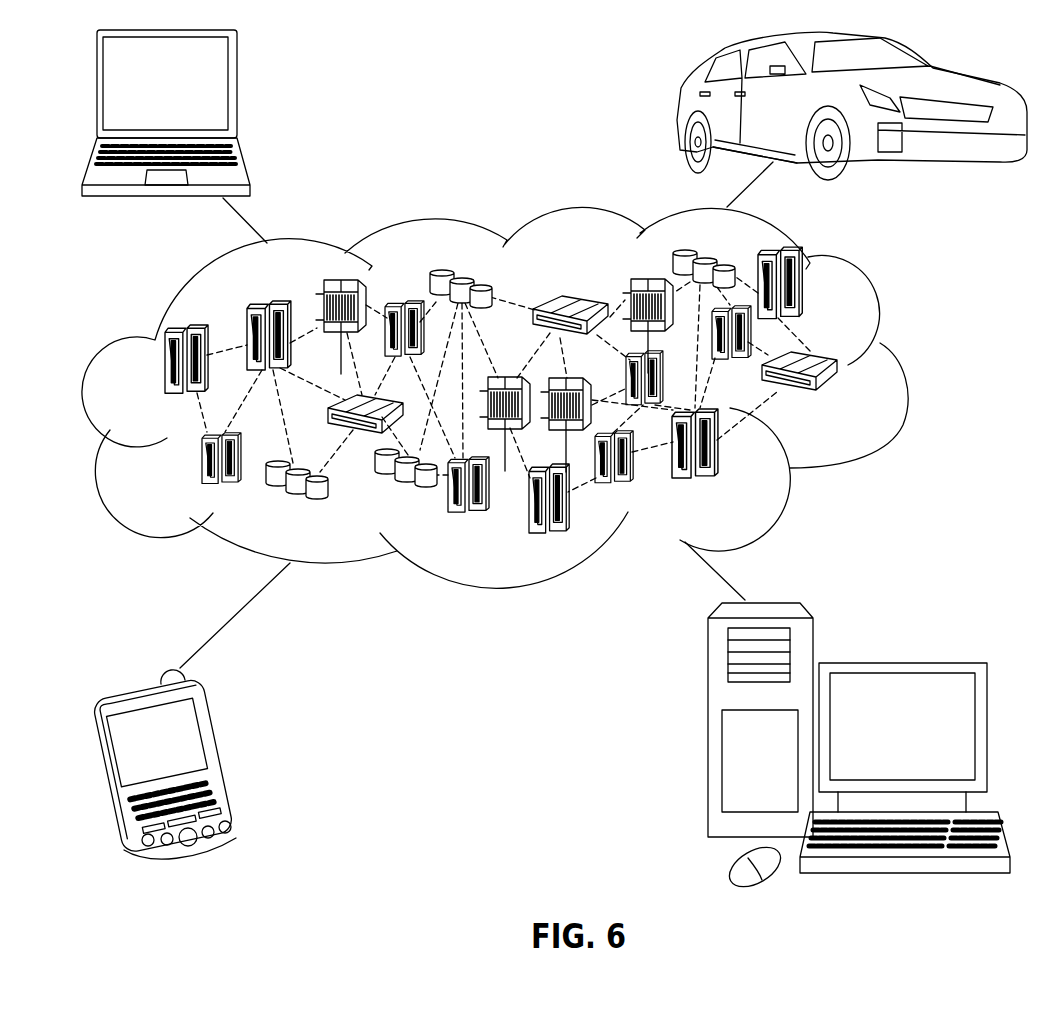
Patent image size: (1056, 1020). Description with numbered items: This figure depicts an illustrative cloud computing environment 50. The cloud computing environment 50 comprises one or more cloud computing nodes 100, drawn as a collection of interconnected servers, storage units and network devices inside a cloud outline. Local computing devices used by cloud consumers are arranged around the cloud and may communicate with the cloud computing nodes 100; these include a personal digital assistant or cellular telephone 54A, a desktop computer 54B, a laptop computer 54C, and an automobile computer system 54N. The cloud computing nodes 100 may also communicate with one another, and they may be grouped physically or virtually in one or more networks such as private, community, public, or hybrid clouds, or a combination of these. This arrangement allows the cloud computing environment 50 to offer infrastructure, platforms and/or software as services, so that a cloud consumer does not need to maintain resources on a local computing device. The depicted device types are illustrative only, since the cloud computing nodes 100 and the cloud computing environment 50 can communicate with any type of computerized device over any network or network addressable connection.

The cloud computing environment 50 is at (902, 368).
The cloud computing nodes 100 is at (842, 403).
The personal digital assistant or cellular telephone 54A is at (225, 758).
The desktop computer 54B is at (900, 663).
The laptop computer 54C is at (236, 92).
The automobile computer system 54N is at (677, 107).